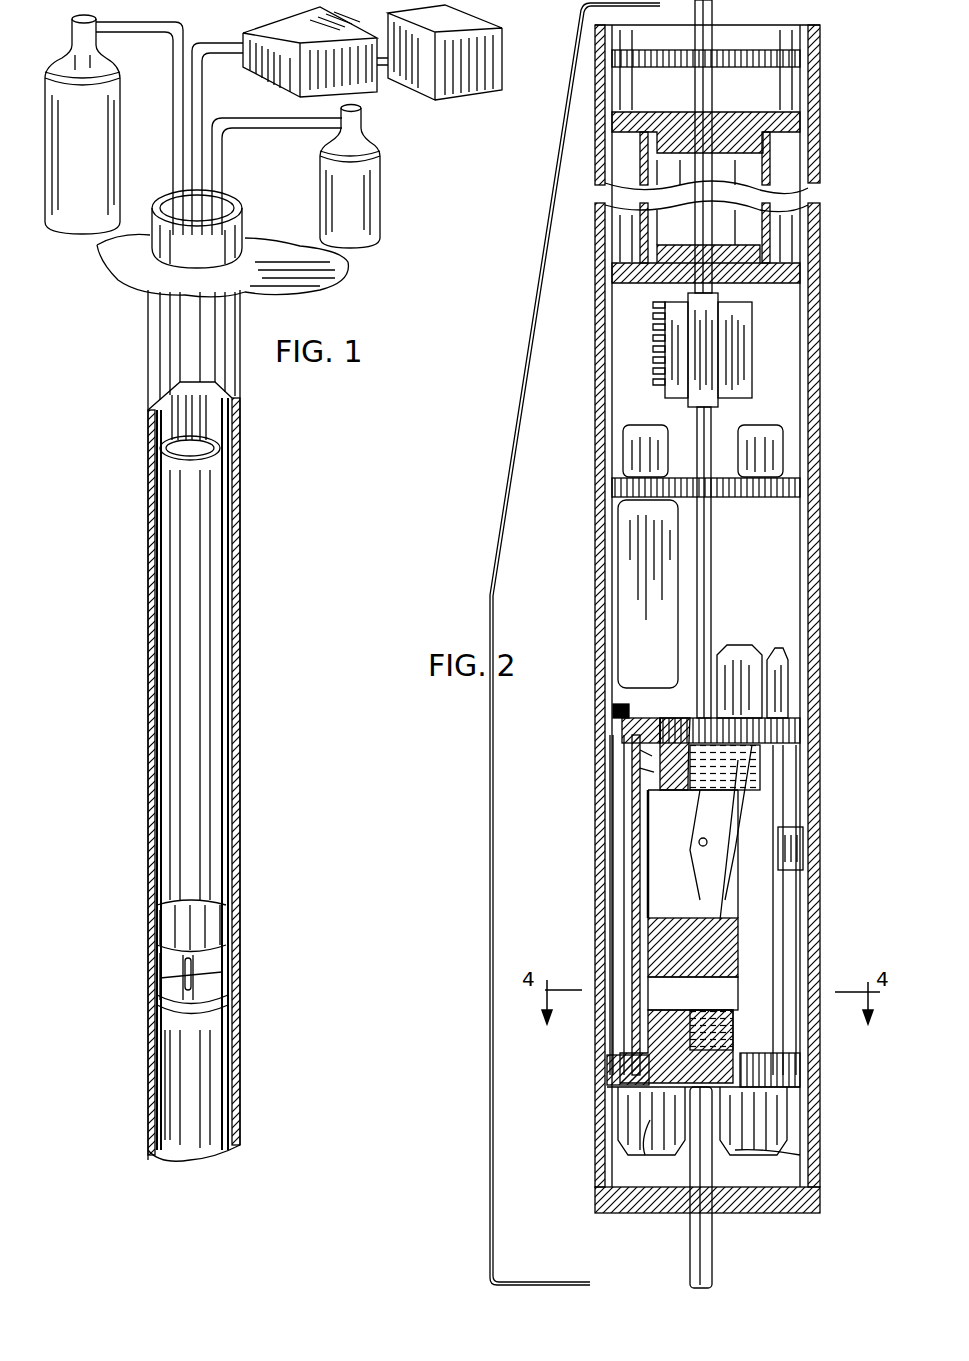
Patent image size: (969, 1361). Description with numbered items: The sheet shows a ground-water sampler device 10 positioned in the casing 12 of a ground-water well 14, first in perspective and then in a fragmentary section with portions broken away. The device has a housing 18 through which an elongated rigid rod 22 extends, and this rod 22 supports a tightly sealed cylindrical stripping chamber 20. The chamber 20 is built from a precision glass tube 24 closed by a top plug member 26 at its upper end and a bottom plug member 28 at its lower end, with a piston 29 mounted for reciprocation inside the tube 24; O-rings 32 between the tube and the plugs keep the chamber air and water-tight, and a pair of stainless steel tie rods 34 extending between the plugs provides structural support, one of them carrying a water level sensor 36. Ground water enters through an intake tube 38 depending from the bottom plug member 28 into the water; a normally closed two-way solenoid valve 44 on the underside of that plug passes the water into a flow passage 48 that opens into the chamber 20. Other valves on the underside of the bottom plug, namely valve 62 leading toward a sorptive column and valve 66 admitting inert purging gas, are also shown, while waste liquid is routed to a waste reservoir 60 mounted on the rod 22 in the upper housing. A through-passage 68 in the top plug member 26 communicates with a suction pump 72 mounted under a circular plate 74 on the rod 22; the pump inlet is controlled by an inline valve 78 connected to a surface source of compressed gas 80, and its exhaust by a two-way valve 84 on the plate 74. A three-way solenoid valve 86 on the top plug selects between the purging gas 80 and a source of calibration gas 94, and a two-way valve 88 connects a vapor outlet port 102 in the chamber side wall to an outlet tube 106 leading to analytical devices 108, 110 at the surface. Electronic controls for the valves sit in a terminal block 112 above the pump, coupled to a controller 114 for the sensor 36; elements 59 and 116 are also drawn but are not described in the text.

In FIG. 1, the sampler device 10 is at (225, 620).
In FIG. 2, the sampler device 10 is at (838, 568).
In FIG. 1, the casing 12 is at (240, 490).
In FIG. 1, the ground-water well 14 is at (247, 193).
In FIG. 1, the housing 18 is at (232, 760).
In FIG. 2, the housing 18 is at (820, 634).
In FIG. 2, the stripping chamber 20 is at (657, 852).
In FIG. 2, the rigid rod 22 is at (712, 565).
In FIG. 2, the glass tube 24 is at (650, 838).
In FIG. 2, the top plug member 26 is at (612, 734).
In FIG. 2, the bottom plug member 28 is at (618, 1080).
In FIG. 2, the piston 29 is at (676, 930).
In FIG. 2, the O-rings 32 is at (640, 768).
In FIG. 2, the tie rods 34 is at (600, 902).
In FIG. 2, the sensor 36 is at (803, 862).
In FIG. 1, the intake tube 38 is at (232, 985).
In FIG. 2, the intake tube 38 is at (712, 1245).
In FIG. 2, the two-way solenoid valve 44 is at (625, 1125).
In FIG. 2, the flow passage 48 is at (665, 1015).
In FIG. 2, the sleeve 59 is at (775, 1125).
In FIG. 2, the waste reservoir 60 is at (770, 230).
In FIG. 2, the two-way solenoid valve 62 is at (670, 1155).
In FIG. 2, the two-way solenoid valve 66 is at (760, 1150).
In FIG. 2, the through-passage 68 is at (655, 720).
In FIG. 2, the suction pump 72 is at (640, 575).
In FIG. 2, the circular plate 74 is at (752, 498).
In FIG. 2, the inline valve 78 is at (645, 435).
In FIG. 1, the source of compressed gas 80 is at (115, 125).
In FIG. 2, the two-way solenoid valve 84 is at (752, 435).
In FIG. 2, the three-way solenoid valve 86 is at (736, 650).
In FIG. 2, the two-way solenoid valve 88 is at (770, 645).
In FIG. 1, the source of calibration gas 94 is at (380, 198).
In FIG. 2, the vapor outlet port 102 is at (700, 846).
In FIG. 1, the outlet tube 106 is at (192, 118).
In FIG. 1, the analytical device 108 is at (270, 14).
In FIG. 1, the analytical device 110 is at (488, 98).
In FIG. 2, the terminal block 112 is at (665, 340).
In FIG. 2, the controller 114 is at (740, 360).
In FIG. 1, the coupling 116 is at (238, 965).